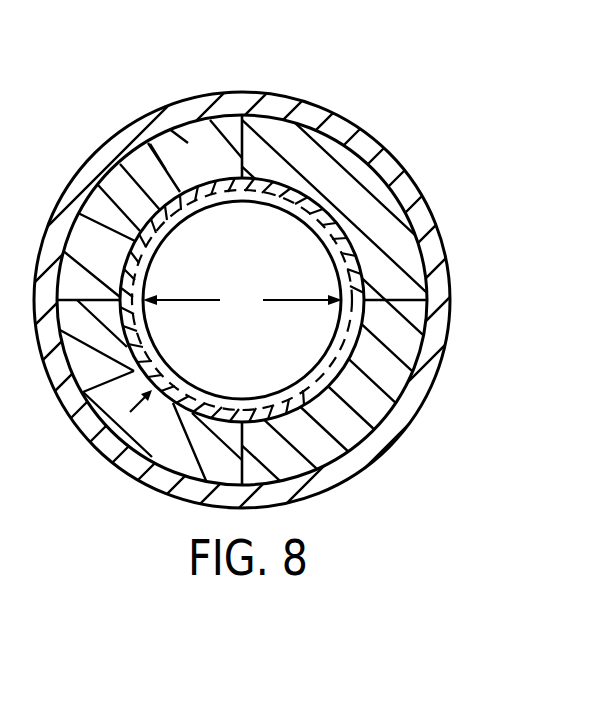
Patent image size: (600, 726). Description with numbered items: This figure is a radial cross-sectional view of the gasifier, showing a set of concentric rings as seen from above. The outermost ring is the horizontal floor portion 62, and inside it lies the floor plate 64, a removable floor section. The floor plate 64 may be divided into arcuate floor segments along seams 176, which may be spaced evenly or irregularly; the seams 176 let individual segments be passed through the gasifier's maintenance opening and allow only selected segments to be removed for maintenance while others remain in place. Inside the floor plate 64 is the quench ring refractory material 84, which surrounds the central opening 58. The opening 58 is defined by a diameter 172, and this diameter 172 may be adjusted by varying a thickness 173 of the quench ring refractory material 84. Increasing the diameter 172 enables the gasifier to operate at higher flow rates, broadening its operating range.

The opening 58 is at (227, 258).
The horizontal floor portion 62 is at (169, 111).
The floor plate 64 is at (222, 176).
The quench ring refractory material 84 is at (320, 373).
The diameter 172 is at (242, 299).
The thickness 173 is at (178, 366).
The seams 176 is at (268, 116).